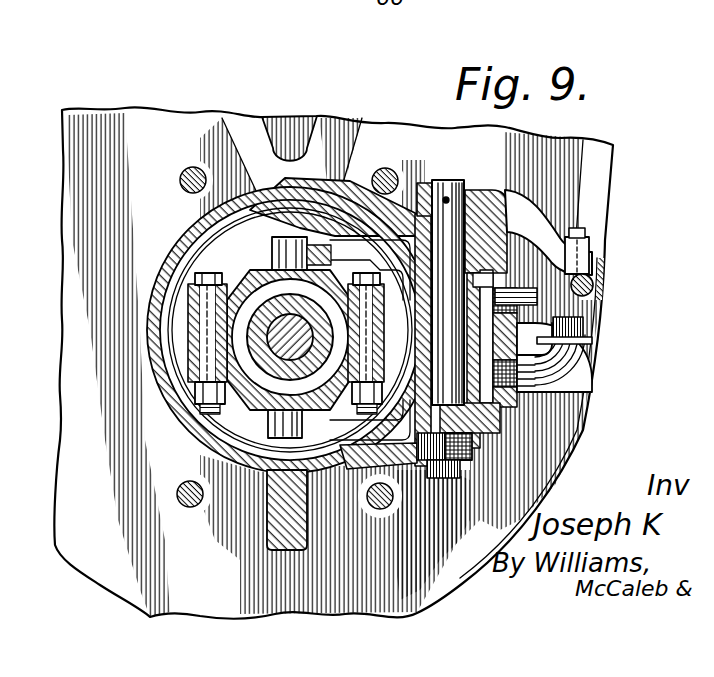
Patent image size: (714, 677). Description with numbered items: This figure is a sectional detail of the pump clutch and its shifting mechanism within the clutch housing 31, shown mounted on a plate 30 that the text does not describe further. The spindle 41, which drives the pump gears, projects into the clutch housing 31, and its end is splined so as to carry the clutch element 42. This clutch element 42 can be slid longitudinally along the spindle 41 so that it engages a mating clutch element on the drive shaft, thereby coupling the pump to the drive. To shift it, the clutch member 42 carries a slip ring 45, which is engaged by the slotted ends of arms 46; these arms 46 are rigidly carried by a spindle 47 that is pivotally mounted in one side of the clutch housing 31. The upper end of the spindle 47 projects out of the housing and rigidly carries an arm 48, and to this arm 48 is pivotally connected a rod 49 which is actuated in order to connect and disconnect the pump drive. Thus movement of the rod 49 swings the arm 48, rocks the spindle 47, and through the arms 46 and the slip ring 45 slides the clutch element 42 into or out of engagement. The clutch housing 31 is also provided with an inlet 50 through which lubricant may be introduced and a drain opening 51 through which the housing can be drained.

The housing plate 30 is at (113, 113).
The clutch housing 31 is at (190, 440).
The spindle 41 is at (263, 340).
The clutch element 42 is at (278, 372).
The slip ring 45 is at (250, 275).
The arms 46 is at (355, 250).
The spindle 47 is at (467, 420).
The arm 48 is at (523, 220).
The rod 49 is at (592, 289).
The inlet 50 is at (575, 372).
The drain opening 51 is at (457, 478).